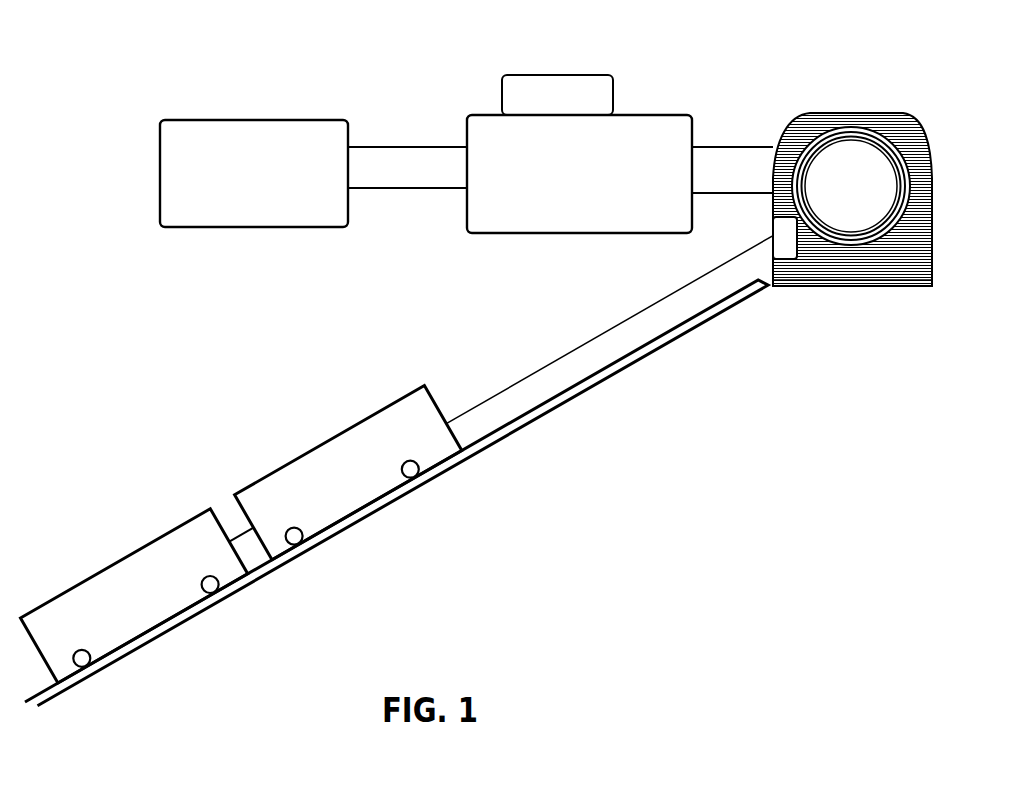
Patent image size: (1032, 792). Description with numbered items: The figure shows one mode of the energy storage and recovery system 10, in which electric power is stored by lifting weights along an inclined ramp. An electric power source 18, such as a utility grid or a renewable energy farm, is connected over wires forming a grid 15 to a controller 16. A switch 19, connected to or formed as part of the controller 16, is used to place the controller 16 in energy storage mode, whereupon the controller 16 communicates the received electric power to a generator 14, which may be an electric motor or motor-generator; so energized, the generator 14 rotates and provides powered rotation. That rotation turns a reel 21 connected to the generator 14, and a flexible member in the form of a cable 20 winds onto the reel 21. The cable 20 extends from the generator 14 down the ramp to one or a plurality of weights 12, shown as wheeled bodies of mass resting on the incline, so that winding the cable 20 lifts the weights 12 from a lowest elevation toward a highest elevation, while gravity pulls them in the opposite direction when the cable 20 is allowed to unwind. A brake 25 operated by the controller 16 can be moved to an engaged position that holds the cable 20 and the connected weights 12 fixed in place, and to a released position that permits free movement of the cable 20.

The energy storage and recovery system 10 is at (224, 91).
The weights 12 is at (165, 547).
The generator 14 is at (831, 225).
The grid 15 is at (378, 143).
The controller 16 is at (657, 115).
The electric power source 18 is at (303, 120).
The switch 19 is at (538, 88).
The cable 20 is at (560, 353).
The reel 21 is at (843, 244).
The brake 25 is at (793, 255).